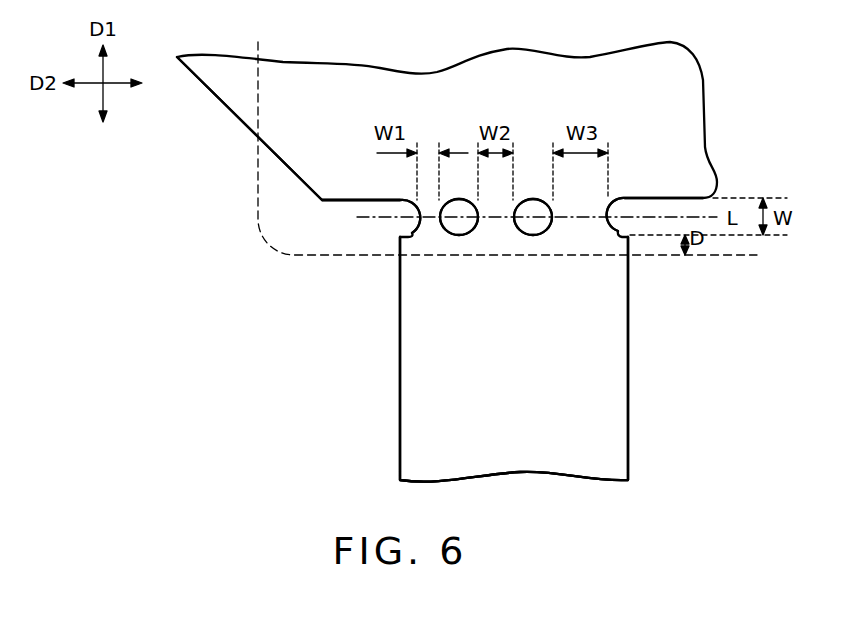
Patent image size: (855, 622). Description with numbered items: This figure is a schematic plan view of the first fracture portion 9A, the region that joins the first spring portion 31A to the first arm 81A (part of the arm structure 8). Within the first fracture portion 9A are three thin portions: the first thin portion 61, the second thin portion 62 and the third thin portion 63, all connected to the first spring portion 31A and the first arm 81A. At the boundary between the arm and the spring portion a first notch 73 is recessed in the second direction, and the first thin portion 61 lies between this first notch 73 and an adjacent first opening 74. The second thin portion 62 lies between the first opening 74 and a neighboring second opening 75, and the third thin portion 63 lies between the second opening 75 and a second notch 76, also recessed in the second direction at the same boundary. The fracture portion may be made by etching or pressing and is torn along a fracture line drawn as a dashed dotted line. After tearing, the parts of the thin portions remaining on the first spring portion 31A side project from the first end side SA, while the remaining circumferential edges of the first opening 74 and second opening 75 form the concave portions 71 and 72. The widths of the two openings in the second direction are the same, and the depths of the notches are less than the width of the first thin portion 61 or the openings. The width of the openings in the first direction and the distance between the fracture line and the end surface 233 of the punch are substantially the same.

The first fracture portion 9A is at (588, 194).
The first spring portion 31A is at (235, 117).
The first notch 73 is at (406, 226).
The first end side SA is at (340, 209).
The first opening 74 is at (459, 236).
The concave portion 71 is at (459, 217).
The second opening 75 is at (533, 236).
The concave portion 72 is at (533, 217).
The first thin portion 61 is at (423, 222).
The second thin portion 62 is at (498, 222).
The third thin portion 63 is at (585, 222).
The second notch 76 is at (636, 229).
The first arm 81A is at (400, 405).
The carriage 8 is at (514, 359).
The end surface 233 is at (733, 257).